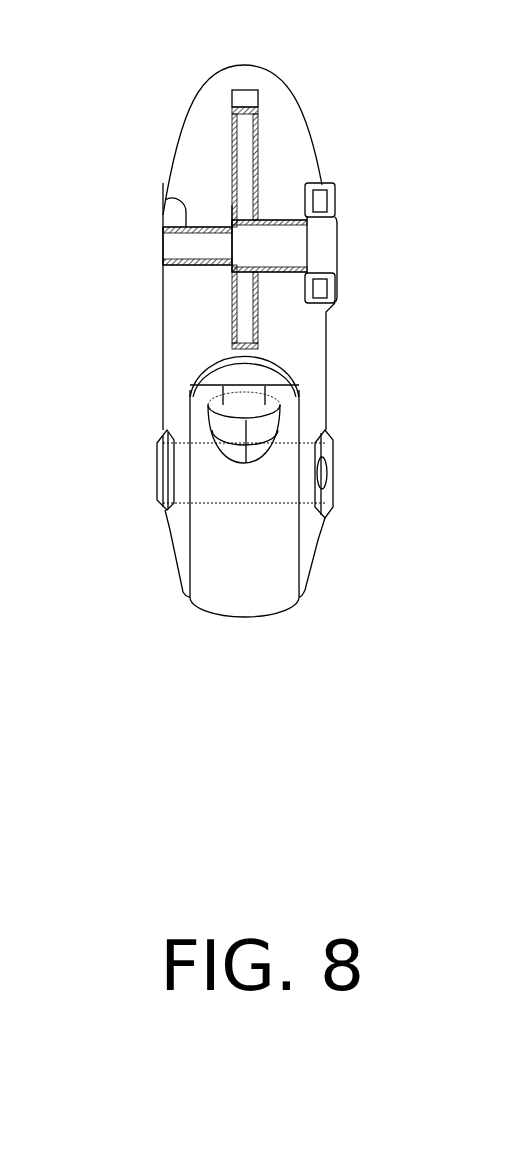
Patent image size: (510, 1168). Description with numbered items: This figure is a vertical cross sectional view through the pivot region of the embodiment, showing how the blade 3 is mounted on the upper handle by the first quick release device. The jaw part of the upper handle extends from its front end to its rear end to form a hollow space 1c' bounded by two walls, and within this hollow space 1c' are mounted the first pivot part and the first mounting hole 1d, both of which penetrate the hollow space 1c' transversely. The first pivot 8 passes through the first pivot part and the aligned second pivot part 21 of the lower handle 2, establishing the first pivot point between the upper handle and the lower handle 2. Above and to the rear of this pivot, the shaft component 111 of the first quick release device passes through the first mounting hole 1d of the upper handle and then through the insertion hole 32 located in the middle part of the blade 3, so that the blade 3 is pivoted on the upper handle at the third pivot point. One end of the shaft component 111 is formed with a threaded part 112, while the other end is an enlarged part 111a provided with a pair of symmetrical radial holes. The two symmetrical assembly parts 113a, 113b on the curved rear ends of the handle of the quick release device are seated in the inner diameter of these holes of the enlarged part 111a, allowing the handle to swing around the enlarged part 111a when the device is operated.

The lower handle 2 is at (249, 626).
The blade 3 is at (240, 122).
The first pivot 8 is at (153, 478).
The second pivot part 21 is at (282, 603).
The insertion hole 32 is at (232, 212).
The hollow space 1c' is at (249, 553).
The first mounting hole 1d is at (165, 200).
The shaft component 111 is at (278, 233).
The enlarged part 111a is at (342, 245).
The threaded part 112 is at (180, 263).
The assembly part 113a is at (320, 303).
The assembly part 113b is at (317, 188).